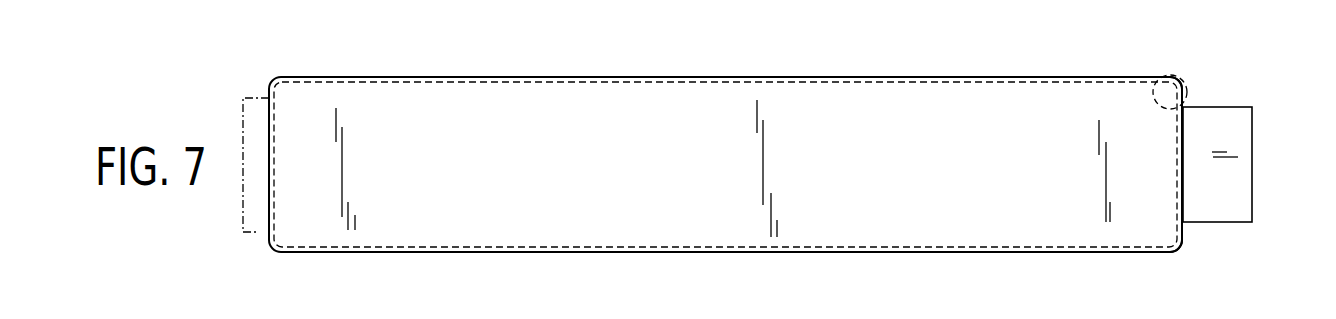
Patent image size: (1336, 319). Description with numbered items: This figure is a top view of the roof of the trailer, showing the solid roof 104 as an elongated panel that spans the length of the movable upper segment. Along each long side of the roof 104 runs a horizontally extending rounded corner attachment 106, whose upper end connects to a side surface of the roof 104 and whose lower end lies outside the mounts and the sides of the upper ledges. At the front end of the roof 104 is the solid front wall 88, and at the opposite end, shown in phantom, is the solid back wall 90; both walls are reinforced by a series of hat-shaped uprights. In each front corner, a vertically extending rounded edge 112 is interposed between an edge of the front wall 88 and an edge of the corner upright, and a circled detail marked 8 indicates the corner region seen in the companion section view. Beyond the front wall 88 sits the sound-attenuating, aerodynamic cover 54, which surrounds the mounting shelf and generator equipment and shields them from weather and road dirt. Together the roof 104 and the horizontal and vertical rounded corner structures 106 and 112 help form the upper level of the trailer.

The section view detail (FIG. 8 indicator) 8 is at (1174, 63).
The aerodynamic cover 54 is at (1252, 177).
The front wall 88 is at (1178, 251).
The back wall 90 is at (268, 120).
The roof 104 is at (703, 172).
The rounded corner attachment 106 is at (837, 76).
The rounded edge 112 is at (1183, 76).